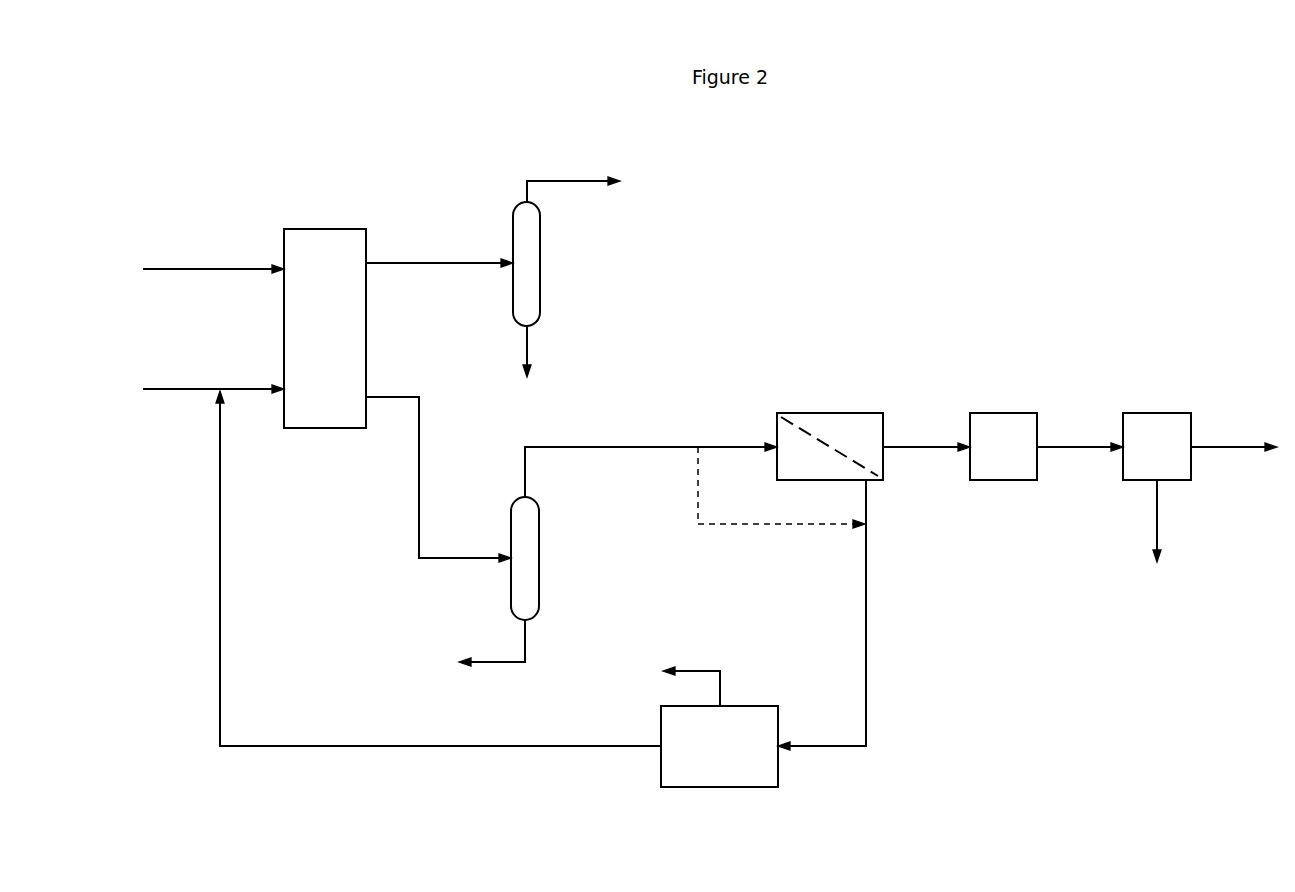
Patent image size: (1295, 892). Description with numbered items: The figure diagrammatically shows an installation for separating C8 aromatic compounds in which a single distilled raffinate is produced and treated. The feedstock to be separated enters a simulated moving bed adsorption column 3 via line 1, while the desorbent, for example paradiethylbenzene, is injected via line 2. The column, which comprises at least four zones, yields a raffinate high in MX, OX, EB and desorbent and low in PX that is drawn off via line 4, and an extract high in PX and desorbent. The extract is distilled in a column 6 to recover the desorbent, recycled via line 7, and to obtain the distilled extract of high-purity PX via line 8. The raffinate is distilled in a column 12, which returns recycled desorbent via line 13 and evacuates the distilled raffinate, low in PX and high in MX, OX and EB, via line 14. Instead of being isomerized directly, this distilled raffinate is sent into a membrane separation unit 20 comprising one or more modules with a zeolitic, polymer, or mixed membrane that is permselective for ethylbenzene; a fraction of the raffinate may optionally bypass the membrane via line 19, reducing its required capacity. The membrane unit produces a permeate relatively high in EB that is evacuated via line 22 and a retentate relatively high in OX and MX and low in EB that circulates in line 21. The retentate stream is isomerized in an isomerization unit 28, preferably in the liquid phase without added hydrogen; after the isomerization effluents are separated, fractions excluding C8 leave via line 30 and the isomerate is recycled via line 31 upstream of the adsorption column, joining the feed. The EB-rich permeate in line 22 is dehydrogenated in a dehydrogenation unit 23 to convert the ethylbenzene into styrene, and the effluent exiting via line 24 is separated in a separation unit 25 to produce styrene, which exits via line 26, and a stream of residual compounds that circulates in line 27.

The feedstock line 1 is at (205, 388).
The desorbent line 2 is at (240, 268).
The simulated moving bed adsorption column 3 is at (284, 331).
The raffinate line 4 is at (419, 480).
The extract distillation column 6 is at (513, 294).
The recycled desorbent line 7 is at (530, 342).
The distilled extract line 8 is at (570, 181).
The raffinate distillation column 12 is at (540, 558).
The recycled desorbent line 13 is at (507, 664).
The distilled raffinate line 14 is at (618, 447).
The bypass line 19 is at (769, 526).
The membrane separation unit 20 is at (829, 413).
The retentate line 21 is at (866, 605).
The permeate line 22 is at (913, 447).
The dehydrogenation unit 23 is at (1003, 413).
The dehydrogenation effluent line 24 is at (1067, 447).
The separation unit 25 is at (1157, 413).
The styrene line 26 is at (1223, 447).
The residual compounds line 27 is at (1160, 511).
The isomerization unit 28 is at (661, 774).
The non-C8 fractions line 30 is at (697, 671).
The isomerate recycle line 31 is at (398, 748).